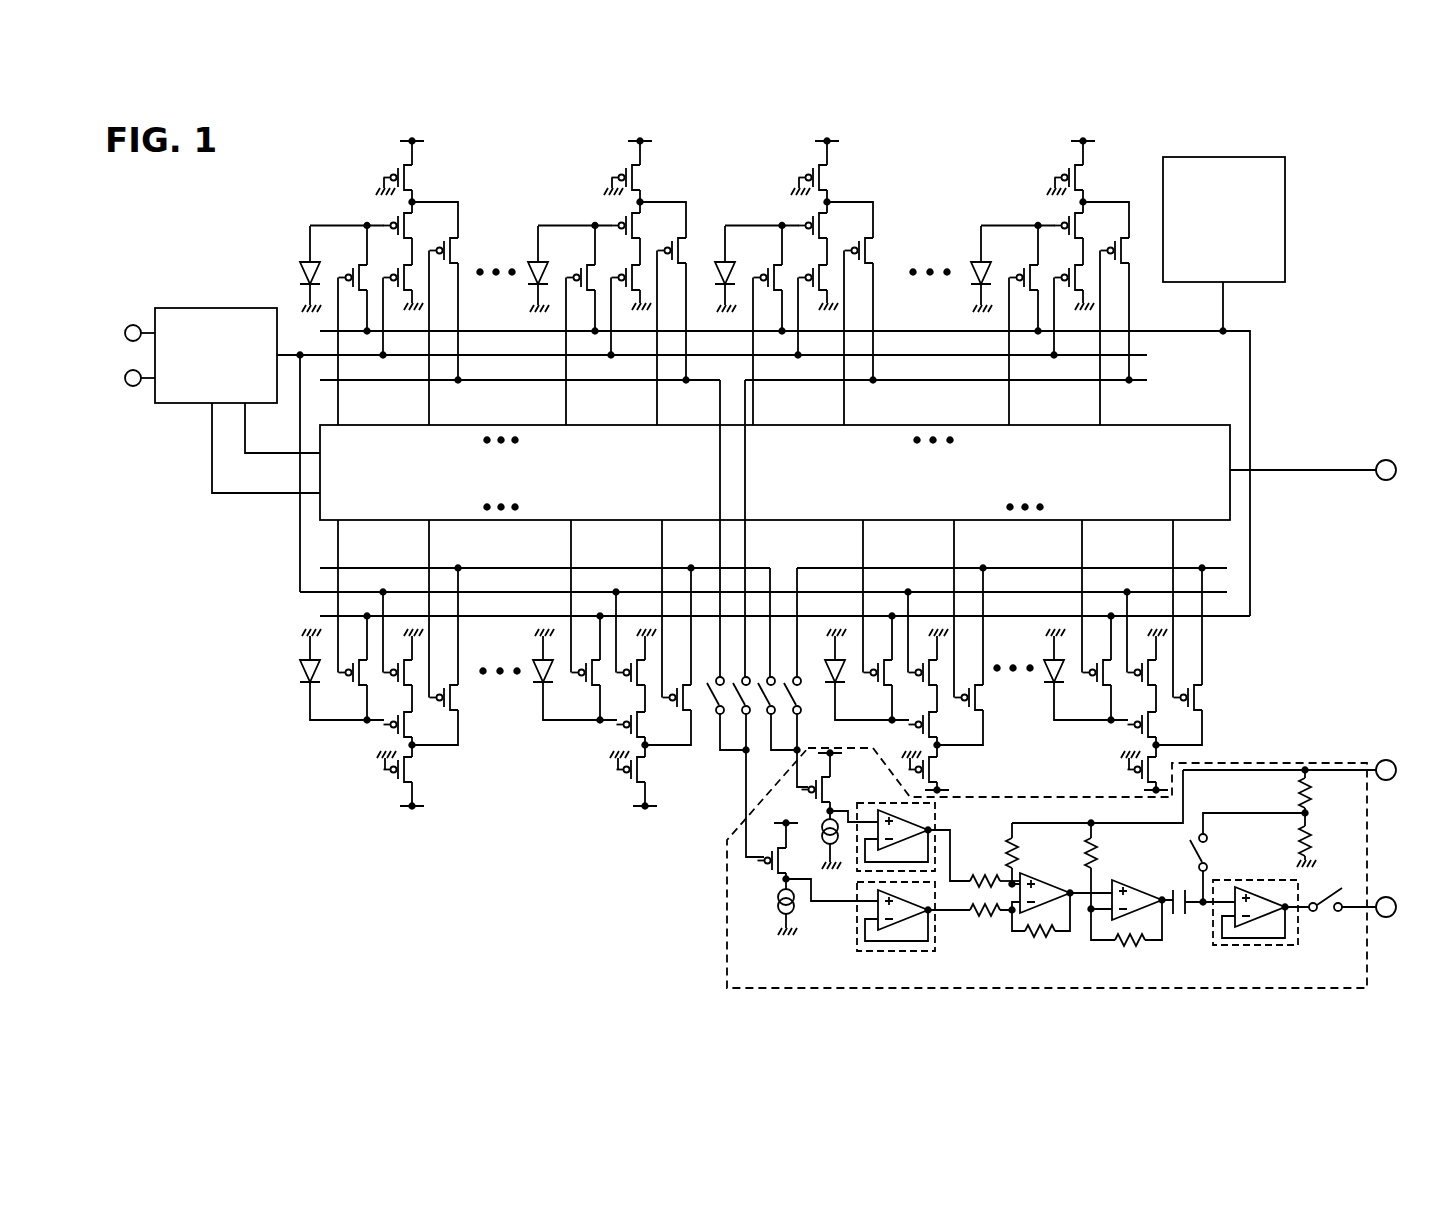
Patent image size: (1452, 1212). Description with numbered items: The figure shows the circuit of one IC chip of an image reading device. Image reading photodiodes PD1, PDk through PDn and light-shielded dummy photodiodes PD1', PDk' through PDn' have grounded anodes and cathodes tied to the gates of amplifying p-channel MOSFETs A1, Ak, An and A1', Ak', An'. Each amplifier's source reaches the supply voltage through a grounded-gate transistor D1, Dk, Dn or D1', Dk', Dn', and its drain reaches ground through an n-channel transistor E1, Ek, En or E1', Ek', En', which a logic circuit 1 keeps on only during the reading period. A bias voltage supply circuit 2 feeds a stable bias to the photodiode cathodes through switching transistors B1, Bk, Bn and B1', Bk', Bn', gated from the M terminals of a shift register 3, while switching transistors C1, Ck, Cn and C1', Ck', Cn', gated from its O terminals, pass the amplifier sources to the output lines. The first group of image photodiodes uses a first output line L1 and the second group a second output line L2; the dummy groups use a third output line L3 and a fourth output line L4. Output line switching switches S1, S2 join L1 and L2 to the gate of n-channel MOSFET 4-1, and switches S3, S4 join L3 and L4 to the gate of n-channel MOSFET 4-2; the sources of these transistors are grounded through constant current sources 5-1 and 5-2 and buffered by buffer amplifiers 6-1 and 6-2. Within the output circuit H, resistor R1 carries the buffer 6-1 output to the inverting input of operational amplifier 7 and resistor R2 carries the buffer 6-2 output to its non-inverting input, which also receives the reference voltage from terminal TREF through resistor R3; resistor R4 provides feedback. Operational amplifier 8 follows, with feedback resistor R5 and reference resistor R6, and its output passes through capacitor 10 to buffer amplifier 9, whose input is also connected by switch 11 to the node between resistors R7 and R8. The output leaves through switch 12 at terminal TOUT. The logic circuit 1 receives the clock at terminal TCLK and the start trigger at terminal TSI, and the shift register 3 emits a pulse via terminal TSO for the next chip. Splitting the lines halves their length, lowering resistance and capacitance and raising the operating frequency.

The logic circuit 1 is at (195, 325).
The bias voltage supply circuit 2 is at (1256, 175).
The shift register 3 is at (1184, 425).
The n-channel MOSFET 4-1 is at (776, 866).
The n-channel MOSFET 4-2 is at (828, 783).
The constant current source 5-1 is at (796, 910).
The constant current source 5-2 is at (823, 821).
The buffer amplifier 6-1 is at (905, 951).
The buffer amplifier 6-2 is at (933, 818).
The operational amplifier 7 is at (1041, 886).
The operational amplifier 8 is at (1124, 886).
The buffer amplifier 9 is at (1260, 888).
The capacitor 10 is at (1180, 916).
The switch 11 is at (1208, 846).
The switch 12 is at (1313, 912).
The output circuit H is at (727, 925).
The first output line L1 is at (497, 384).
The second output line L2 is at (950, 384).
The third output line L3 is at (513, 564).
The fourth output line L4 is at (1045, 564).
The first output line switching switch S1 is at (712, 710).
The second output line switching switch S2 is at (751, 710).
The third output line switching switch S3 is at (772, 677).
The fourth output line switching switch S4 is at (798, 690).
The resistor R1 is at (983, 914).
The resistor R2 is at (983, 877).
The resistor R3 is at (1020, 850).
The resistor R4 is at (1034, 934).
The resistor R5 is at (1130, 942).
The resistor R6 is at (1094, 850).
The resistor R7 is at (1310, 790).
The resistor R8 is at (1310, 836).
The terminal TSI is at (133, 325).
The terminal TCLK is at (134, 386).
The terminal TSO is at (1386, 460).
The terminal TREF is at (1387, 760).
The terminal TOUT is at (1387, 896).
The photodiode PD1 is at (276, 269).
The photodiode PDk is at (515, 269).
The photodiode PDn is at (993, 247).
The dummy photodiode PD1' is at (303, 674).
The dummy photodiode PDk' is at (566, 694).
The dummy photodiode PDn' is at (1081, 689).
The p-channel MOSFET for amplification A1 is at (380, 225).
The p-channel MOSFET for switching B1 is at (365, 326).
The p-channel MOSFET for switching C1 is at (457, 313).
The p-channel MOSFET D1 is at (416, 177).
The n-channel MOSFET E1 is at (415, 311).
The p-channel MOSFET for amplification Ak is at (609, 225).
The p-channel MOSFET for switching Bk is at (594, 326).
The p-channel MOSFET for switching Ck is at (677, 313).
The p-channel MOSFET Dk is at (644, 177).
The n-channel MOSFET Ek is at (643, 311).
The p-channel MOSFET for amplification An is at (1052, 221).
The p-channel MOSFET for switching Bn is at (1037, 326).
The p-channel MOSFET for switching Cn is at (1119, 313).
The p-channel MOSFET Dn is at (1087, 177).
The n-channel MOSFET En is at (1111, 311).
The p-channel MOSFET for amplification A1' is at (430, 747).
The p-channel MOSFET for switching B1' is at (349, 638).
The p-channel MOSFET for switching C1' is at (458, 632).
The p-channel MOSFET D1' is at (427, 780).
The n-channel MOSFET E1' is at (439, 637).
The p-channel MOSFET for amplification Ak' is at (652, 728).
The p-channel MOSFET for switching Bk' is at (587, 639).
The p-channel MOSFET for switching Ck' is at (679, 632).
The p-channel MOSFET Dk' is at (656, 779).
The n-channel MOSFET Ek' is at (653, 637).
The p-channel MOSFET for amplification An' is at (1187, 725).
The p-channel MOSFET for switching Bn' is at (1101, 634).
The p-channel MOSFET for switching Cn' is at (1201, 632).
The p-channel MOSFET Dn' is at (1182, 762).
The n-channel MOSFET En' is at (1184, 637).